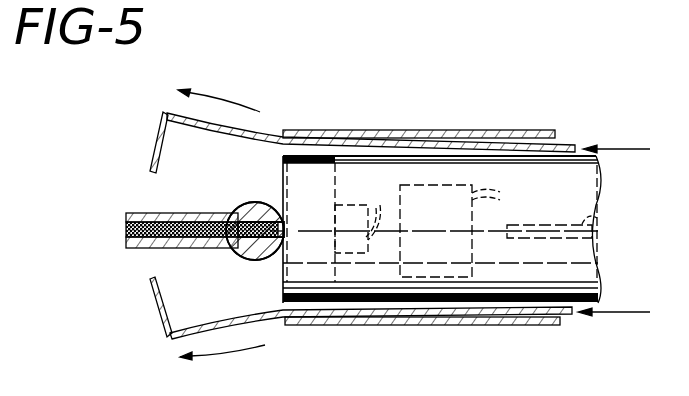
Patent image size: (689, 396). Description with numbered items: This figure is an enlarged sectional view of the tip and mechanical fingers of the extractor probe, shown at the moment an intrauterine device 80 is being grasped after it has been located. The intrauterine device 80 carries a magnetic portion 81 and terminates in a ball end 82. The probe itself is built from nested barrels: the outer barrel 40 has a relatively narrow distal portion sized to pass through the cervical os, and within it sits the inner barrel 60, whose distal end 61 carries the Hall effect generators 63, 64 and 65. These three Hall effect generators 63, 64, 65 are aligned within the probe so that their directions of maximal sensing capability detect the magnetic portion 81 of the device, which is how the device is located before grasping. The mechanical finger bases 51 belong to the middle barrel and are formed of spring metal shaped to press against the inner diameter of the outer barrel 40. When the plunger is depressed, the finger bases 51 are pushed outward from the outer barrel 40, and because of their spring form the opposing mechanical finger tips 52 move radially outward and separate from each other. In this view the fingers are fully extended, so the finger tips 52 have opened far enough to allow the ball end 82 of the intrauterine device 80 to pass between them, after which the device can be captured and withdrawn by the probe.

The outer barrel assembly 40 is at (447, 126).
The mechanical finger bases 51 is at (262, 135).
The mechanical finger tips 52 is at (157, 148).
The inner barrel assembly 60 is at (580, 199).
The distal end 61 is at (283, 178).
The Hall effect generator 63 is at (330, 300).
The Hall effect generator 64 is at (457, 277).
The Hall effect generator 65 is at (565, 240).
The intrauterine device 80 is at (156, 200).
The magnetic portion 81 is at (201, 246).
The ball end 82 is at (262, 262).